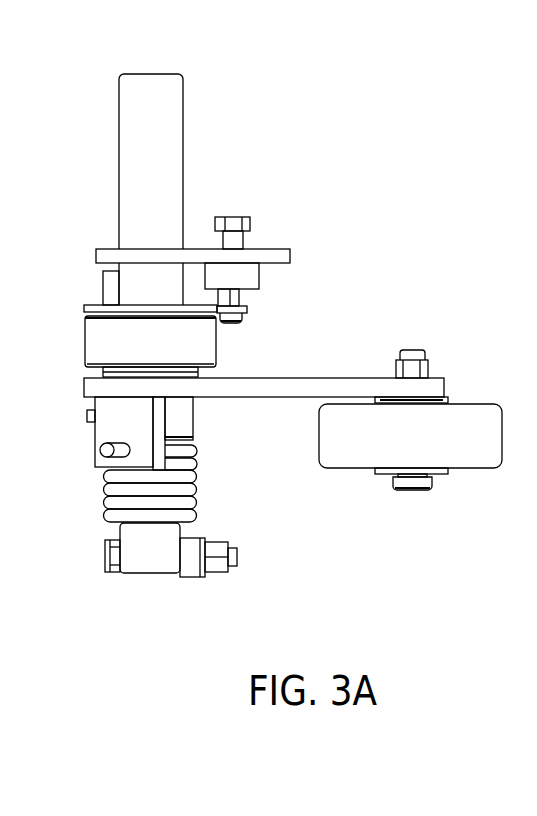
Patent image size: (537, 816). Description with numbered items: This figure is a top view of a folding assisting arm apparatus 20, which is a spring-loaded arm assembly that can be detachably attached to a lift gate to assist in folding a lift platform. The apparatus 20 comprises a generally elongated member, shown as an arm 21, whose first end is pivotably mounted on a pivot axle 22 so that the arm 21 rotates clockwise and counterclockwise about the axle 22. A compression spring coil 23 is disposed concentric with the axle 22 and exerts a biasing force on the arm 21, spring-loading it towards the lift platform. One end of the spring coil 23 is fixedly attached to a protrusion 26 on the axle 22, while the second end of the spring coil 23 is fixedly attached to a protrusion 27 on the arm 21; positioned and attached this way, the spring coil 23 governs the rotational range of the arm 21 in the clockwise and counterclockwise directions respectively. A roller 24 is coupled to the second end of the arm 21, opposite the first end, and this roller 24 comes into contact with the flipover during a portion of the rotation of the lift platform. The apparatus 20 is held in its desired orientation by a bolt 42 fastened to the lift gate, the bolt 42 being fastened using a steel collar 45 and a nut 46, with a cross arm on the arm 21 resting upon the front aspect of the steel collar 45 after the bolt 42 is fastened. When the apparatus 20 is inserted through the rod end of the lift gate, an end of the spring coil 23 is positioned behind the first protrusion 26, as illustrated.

The folding assisting arm apparatus 20 is at (282, 352).
The arm 21 is at (300, 387).
The pivot axle 22 is at (135, 562).
The compression spring coil 23 is at (177, 498).
The roller 24 is at (467, 417).
The protrusion 26 is at (237, 548).
The protrusion 27 is at (103, 427).
The bolt 42 is at (232, 242).
The steel collar 45 is at (247, 279).
The nut 46 is at (238, 300).